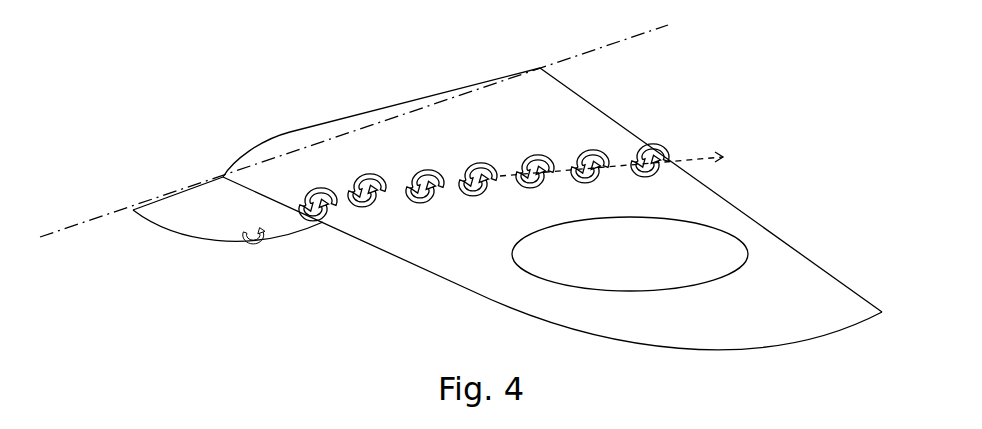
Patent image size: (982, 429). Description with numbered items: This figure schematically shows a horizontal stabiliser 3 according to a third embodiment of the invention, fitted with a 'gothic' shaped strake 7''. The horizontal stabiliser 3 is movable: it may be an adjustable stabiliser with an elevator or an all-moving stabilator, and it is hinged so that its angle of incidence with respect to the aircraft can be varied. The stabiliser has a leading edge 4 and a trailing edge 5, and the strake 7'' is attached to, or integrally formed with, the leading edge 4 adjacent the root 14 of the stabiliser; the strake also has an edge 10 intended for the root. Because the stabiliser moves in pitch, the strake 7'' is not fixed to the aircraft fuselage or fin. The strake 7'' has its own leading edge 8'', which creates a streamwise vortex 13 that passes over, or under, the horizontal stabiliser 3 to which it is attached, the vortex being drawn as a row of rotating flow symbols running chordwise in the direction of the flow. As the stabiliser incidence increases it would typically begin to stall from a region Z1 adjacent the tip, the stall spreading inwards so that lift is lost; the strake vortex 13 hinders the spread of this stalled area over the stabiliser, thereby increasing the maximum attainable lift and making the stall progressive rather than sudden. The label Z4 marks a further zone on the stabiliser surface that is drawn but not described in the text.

The horizontal stabiliser 3 is at (500, 215).
The leading edge 4 is at (403, 260).
The trailing edge 5 is at (782, 239).
The edge 10 is at (180, 192).
The root 14 is at (405, 108).
The streamwise vortex 13 is at (673, 162).
The 'gothic' shaped strake 7'' is at (239, 271).
The leading edge 8'' is at (220, 263).
The region Z1 is at (620, 258).
The zone Z4 with vortices Z4 is at (502, 120).